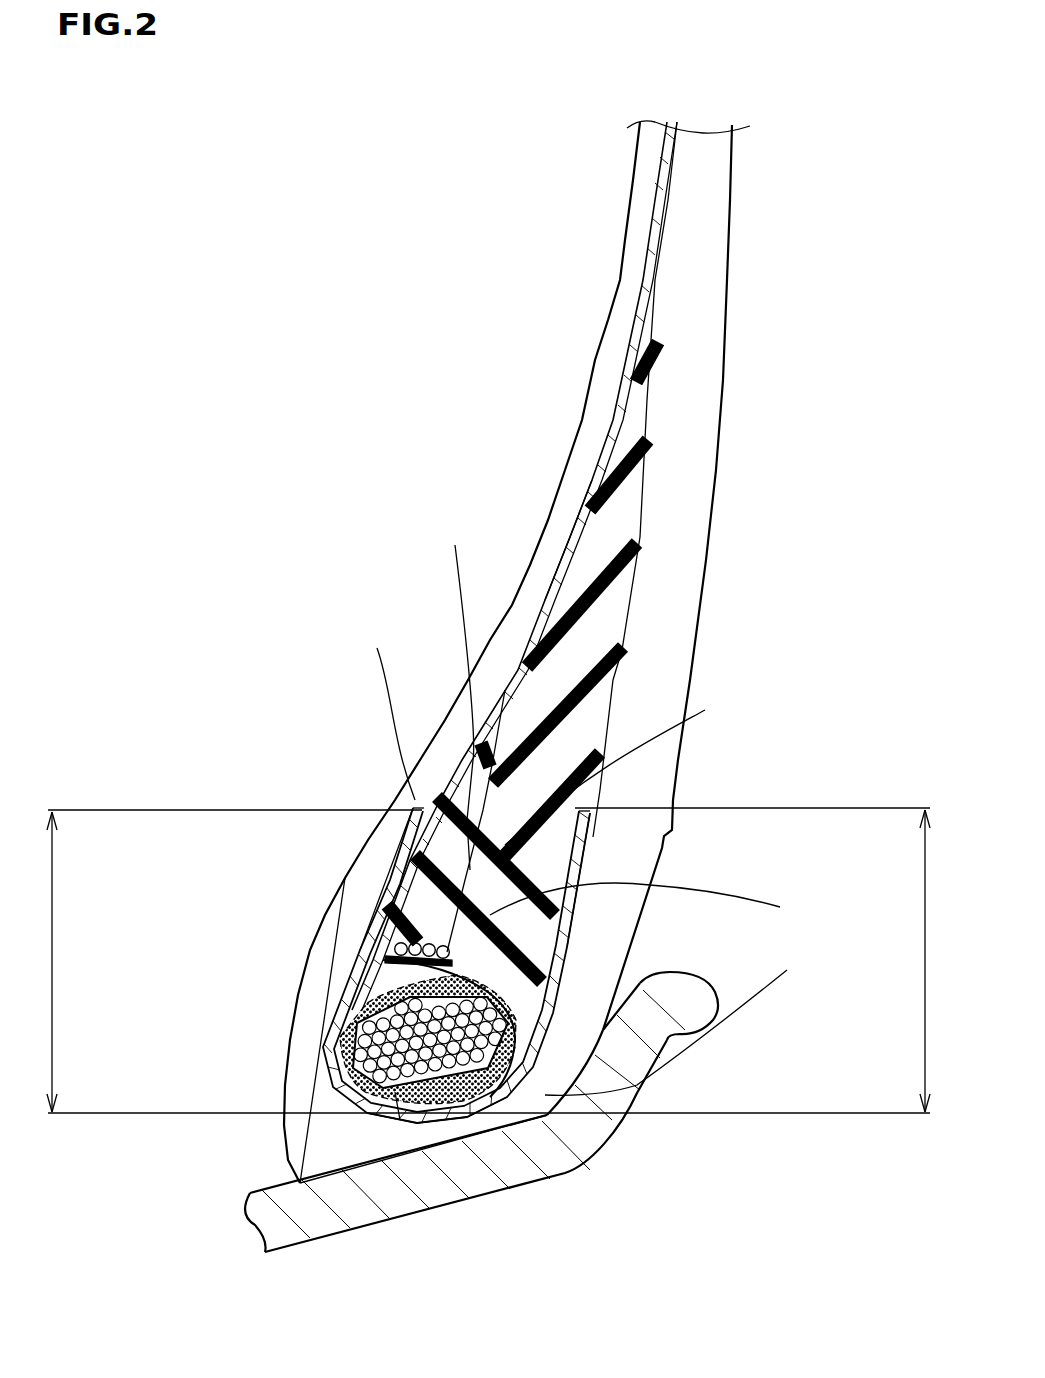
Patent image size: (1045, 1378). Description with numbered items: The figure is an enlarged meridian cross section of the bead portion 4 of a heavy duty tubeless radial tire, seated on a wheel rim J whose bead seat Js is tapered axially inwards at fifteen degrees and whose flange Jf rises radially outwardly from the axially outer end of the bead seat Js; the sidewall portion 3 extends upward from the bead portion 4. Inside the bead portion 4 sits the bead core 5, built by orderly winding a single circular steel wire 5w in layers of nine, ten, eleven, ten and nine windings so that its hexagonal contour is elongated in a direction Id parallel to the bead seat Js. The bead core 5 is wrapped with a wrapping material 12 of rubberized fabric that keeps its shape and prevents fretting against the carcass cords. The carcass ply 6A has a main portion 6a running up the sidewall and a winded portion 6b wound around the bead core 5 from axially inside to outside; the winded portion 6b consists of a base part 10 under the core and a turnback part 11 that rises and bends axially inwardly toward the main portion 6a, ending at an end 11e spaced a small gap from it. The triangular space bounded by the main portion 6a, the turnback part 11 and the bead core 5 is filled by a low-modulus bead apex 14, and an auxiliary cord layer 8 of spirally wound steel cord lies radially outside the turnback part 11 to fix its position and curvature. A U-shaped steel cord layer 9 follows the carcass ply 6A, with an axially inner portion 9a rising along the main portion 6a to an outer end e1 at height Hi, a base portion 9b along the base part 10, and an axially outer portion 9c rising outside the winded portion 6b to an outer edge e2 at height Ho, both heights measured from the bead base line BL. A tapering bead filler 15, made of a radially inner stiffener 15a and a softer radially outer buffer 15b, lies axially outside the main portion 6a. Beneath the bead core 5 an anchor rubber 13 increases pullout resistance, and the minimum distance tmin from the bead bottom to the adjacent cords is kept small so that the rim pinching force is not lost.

The sidewall portion 3 is at (752, 243).
The bead portion 4 is at (215, 928).
The bead core 5 is at (400, 1022).
The steel wire 5w is at (403, 1120).
The carcass ply 6A is at (657, 212).
The carcass ply main portion 6a is at (595, 474).
The winded portion 6b is at (692, 987).
The auxiliary cord layer 8 is at (383, 960).
The steel cord layer 9 is at (315, 1098).
The axially inner portion 9a is at (417, 950).
The base portion 9b is at (500, 1120).
The axially outer portion 9c is at (590, 828).
The base part 10 is at (684, 1016).
The turnback part 11 is at (657, 901).
The end of turnback part 11e is at (400, 953).
The wrapping material 12 is at (387, 1000).
The anchor rubber 13 is at (490, 1112).
The bead apex 14 is at (455, 689).
The bead filler 15 is at (637, 552).
The stiffener 15a is at (490, 745).
The buffer 15b is at (573, 647).
The radially outer end of axially inner portion e1 is at (385, 711).
The radially outer edge of axially outer portion e2 is at (625, 763).
The height of radially outer end of axially inner portion Hi is at (228, 961).
The height of radially outer end of axially outer portion Ho is at (759, 960).
The bead base line BL is at (762, 1118).
The wheel rim J is at (487, 1114).
The flange Jf is at (667, 990).
The bead seat Js is at (340, 1172).
The inclining direction Id is at (222, 1233).
The minimum distance tmin is at (455, 1122).